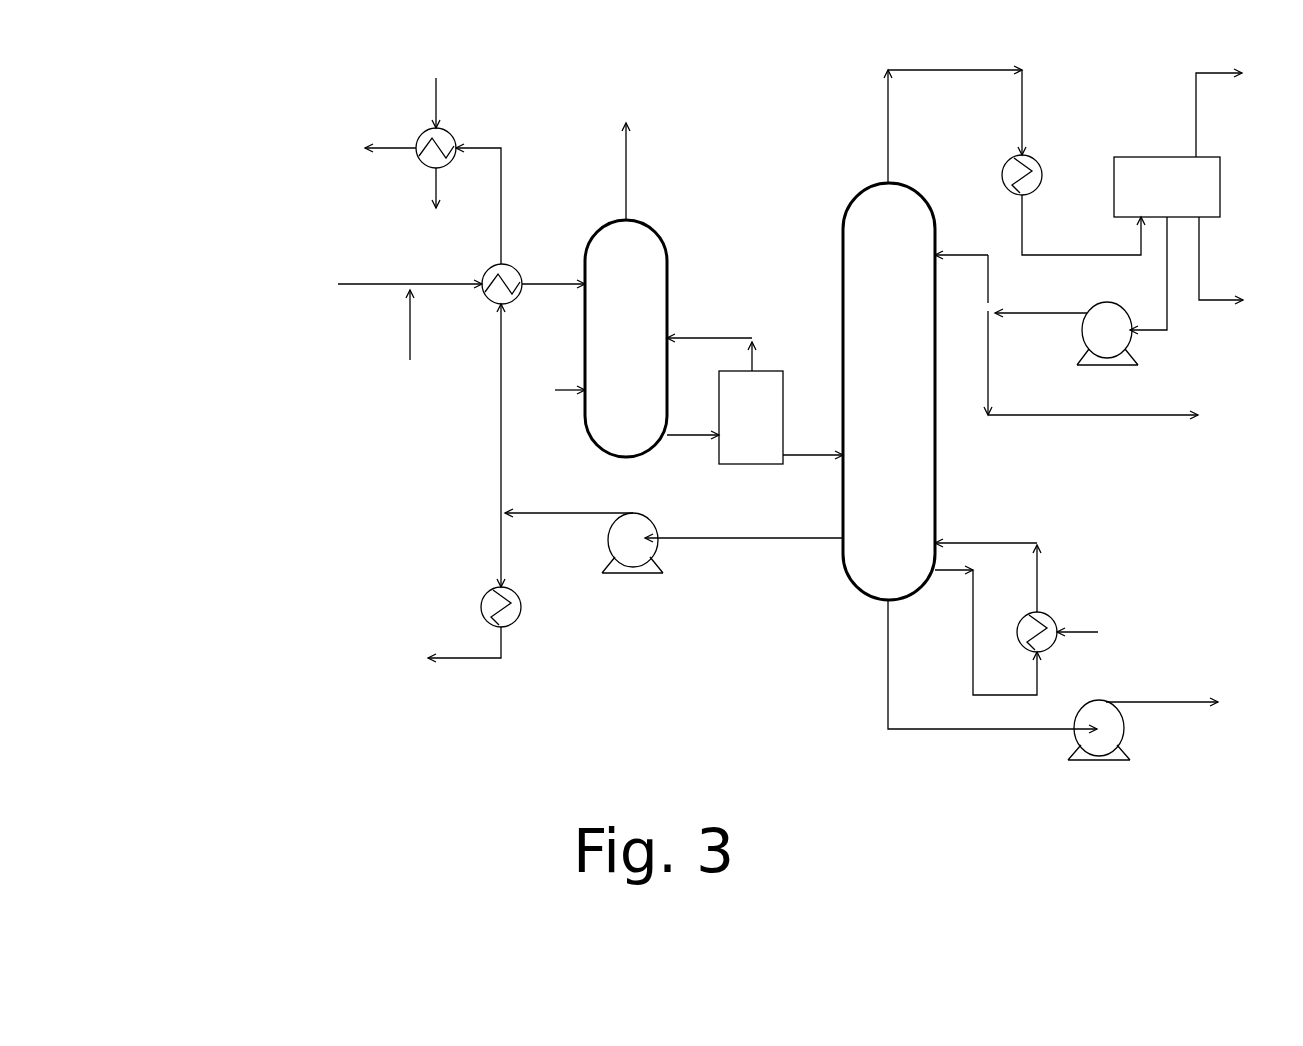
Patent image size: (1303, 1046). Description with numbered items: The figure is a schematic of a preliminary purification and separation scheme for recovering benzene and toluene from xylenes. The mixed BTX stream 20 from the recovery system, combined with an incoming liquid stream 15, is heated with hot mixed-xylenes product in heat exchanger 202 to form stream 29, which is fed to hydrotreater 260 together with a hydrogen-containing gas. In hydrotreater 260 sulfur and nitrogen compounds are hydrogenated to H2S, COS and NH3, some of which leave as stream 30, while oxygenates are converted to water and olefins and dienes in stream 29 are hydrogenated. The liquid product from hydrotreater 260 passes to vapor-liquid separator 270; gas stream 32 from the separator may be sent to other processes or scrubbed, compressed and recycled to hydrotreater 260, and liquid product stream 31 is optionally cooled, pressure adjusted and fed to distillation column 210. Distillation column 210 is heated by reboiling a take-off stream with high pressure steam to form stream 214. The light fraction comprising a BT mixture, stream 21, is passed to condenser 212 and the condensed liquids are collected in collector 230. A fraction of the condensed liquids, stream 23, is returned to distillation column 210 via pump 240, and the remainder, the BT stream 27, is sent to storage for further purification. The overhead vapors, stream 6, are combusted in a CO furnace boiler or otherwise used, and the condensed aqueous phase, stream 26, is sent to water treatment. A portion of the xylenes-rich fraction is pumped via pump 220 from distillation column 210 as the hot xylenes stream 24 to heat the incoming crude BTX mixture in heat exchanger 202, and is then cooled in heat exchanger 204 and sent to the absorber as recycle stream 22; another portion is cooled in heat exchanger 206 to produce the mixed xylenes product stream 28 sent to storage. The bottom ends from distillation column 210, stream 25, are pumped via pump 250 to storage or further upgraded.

The overhead vapor stream 6 is at (1230, 82).
The feed stream 15 is at (405, 338).
The mixed BTX stream 20 is at (365, 278).
The light fraction stream 21 is at (880, 130).
The mixed xylenes recycle stream 22 is at (383, 142).
The condensed liquid reflux stream 23 is at (1025, 320).
The hot xylenes stream 24 is at (538, 507).
The bottom ends stream 25 is at (894, 650).
The condensed aqueous phase stream 26 is at (1205, 257).
The BT stream 27 is at (1100, 422).
The product stream 28 is at (446, 650).
The heated feed stream 29 is at (540, 278).
The hydrotreater gas stream 30 is at (633, 172).
The liquid product stream 31 is at (800, 450).
The gas stream 32 is at (716, 330).
The heat exchanger 202 is at (488, 330).
The heat exchanger 204 is at (454, 129).
The heat exchanger 206 is at (534, 573).
The distillation column 210 is at (915, 391).
The condenser 212 is at (1054, 162).
The reboiler steam stream 214 is at (1061, 619).
The pump 220 is at (722, 529).
The collector 230 is at (1167, 187).
The pump 240 is at (1122, 304).
The pump 250 is at (1166, 727).
The hydrotreater 260 is at (622, 338).
The vapor-liquid separator 270 is at (751, 417).